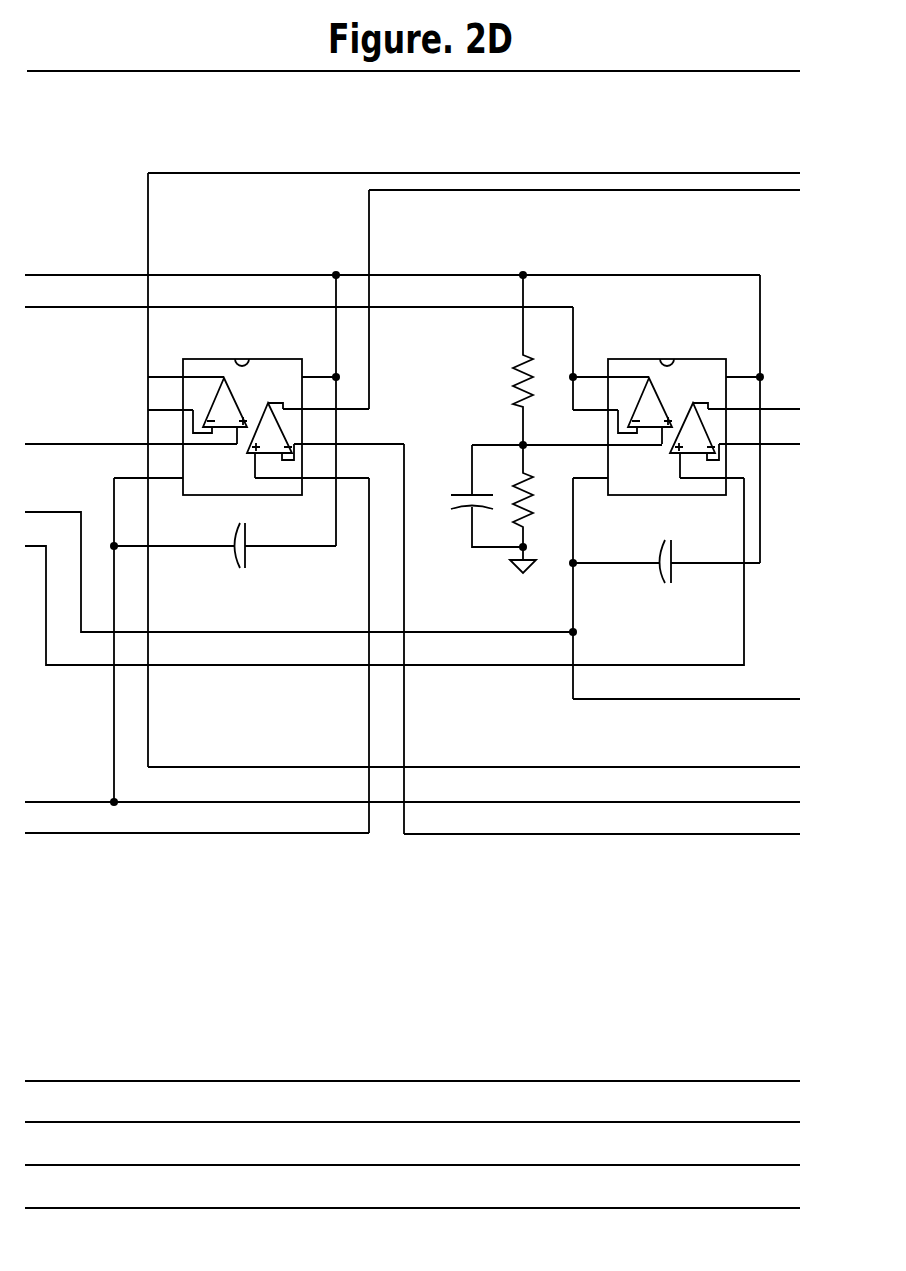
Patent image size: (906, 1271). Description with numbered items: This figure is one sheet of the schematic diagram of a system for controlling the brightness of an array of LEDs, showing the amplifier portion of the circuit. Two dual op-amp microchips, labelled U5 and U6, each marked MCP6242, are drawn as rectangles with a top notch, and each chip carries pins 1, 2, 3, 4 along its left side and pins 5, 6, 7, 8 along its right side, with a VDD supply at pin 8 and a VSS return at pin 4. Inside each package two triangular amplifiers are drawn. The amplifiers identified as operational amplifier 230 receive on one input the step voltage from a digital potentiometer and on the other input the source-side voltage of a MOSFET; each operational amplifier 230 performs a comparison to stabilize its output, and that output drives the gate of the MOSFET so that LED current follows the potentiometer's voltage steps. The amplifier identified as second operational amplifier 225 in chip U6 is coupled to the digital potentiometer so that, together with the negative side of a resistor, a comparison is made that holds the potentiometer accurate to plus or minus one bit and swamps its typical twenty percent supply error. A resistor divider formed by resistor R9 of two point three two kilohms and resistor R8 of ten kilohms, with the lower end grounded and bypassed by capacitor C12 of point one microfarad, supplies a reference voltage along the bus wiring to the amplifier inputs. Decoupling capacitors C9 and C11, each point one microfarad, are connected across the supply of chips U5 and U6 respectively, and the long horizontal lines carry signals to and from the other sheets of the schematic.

The second operational amplifier 225 is at (660, 401).
The operational amplifier 230 is at (263, 415).
The dual op amp MCP6242 U5 is at (242, 402).
The dual op amp MCP6242 U6 is at (667, 402).
The resistor 2.32K R9 is at (505, 360).
The resistor 10K R8 is at (535, 509).
The capacitor .1uF C9 is at (238, 567).
The capacitor .1uF C11 is at (665, 584).
The capacitor .1uF C12 is at (473, 496).
The pin 1 is at (398, 366).
The pin 2 is at (383, 401).
The pin 3 is at (343, 436).
The pin 4 is at (361, 469).
The pin 5 is at (499, 469).
The pin 6 is at (547, 436).
The pin 7 is at (541, 401).
The pin 8 is at (531, 367).